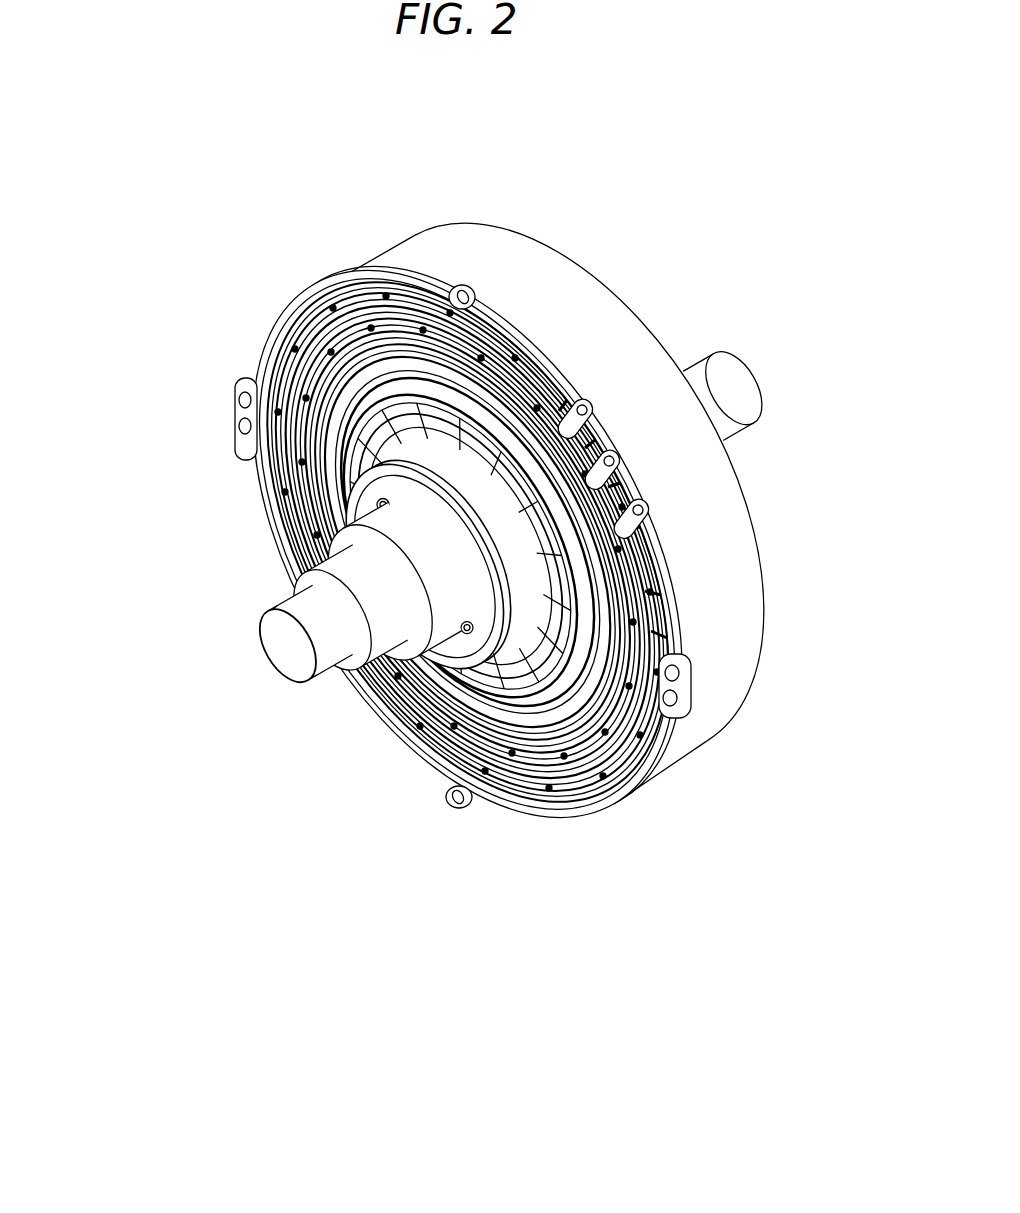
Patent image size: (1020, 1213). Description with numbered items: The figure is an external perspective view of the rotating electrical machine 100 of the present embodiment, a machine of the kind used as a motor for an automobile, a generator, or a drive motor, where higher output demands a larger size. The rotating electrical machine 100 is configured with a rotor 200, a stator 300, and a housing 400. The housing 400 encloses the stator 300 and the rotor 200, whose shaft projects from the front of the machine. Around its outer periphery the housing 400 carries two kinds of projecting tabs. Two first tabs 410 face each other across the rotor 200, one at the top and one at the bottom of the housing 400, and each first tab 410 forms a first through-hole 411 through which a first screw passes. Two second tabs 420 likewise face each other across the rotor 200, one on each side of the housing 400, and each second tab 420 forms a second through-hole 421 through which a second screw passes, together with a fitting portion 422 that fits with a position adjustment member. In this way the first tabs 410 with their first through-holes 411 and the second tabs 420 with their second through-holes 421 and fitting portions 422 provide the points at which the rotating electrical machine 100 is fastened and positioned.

The rotating electrical machine 100 is at (248, 862).
The rotor 200 is at (510, 655).
The stator 300 is at (593, 737).
The housing 400 is at (733, 558).
The first tab 410 is at (470, 298).
The first through-hole 411 is at (447, 284).
The second tab 420 is at (243, 380).
The second through-hole 421 is at (240, 420).
The fitting portion 422 is at (243, 387).